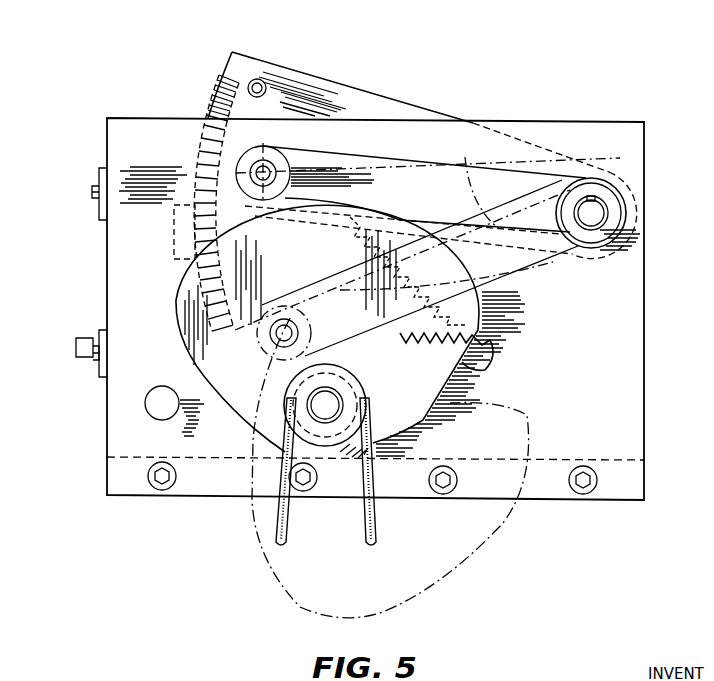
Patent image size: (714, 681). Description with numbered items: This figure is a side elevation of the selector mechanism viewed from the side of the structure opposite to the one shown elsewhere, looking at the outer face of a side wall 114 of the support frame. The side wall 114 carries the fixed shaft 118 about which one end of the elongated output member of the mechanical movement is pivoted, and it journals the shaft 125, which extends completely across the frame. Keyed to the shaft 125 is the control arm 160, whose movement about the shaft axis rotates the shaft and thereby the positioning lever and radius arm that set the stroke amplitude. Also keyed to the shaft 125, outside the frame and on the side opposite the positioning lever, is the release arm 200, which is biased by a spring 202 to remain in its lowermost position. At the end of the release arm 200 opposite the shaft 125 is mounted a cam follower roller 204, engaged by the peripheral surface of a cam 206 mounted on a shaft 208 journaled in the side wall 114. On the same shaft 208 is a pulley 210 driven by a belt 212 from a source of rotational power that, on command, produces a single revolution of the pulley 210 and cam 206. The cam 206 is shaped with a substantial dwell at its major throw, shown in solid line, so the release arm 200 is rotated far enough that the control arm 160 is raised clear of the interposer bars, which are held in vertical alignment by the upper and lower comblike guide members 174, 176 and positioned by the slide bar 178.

The side wall 114 is at (628, 339).
The fixed shaft 118 is at (158, 417).
The shaft 125 is at (592, 213).
The control arm 160 is at (395, 80).
The upper comblike guide member 174 is at (101, 172).
The lower comblike guide member 176 is at (98, 372).
The slide bar 178 is at (75, 348).
The release arm 200 is at (455, 172).
The spring 202 is at (482, 343).
The cam follower roller 204 is at (258, 150).
The cam 206 is at (177, 323).
The shaft 208 is at (316, 402).
The pulley 210 is at (345, 404).
The belt 212 is at (379, 540).